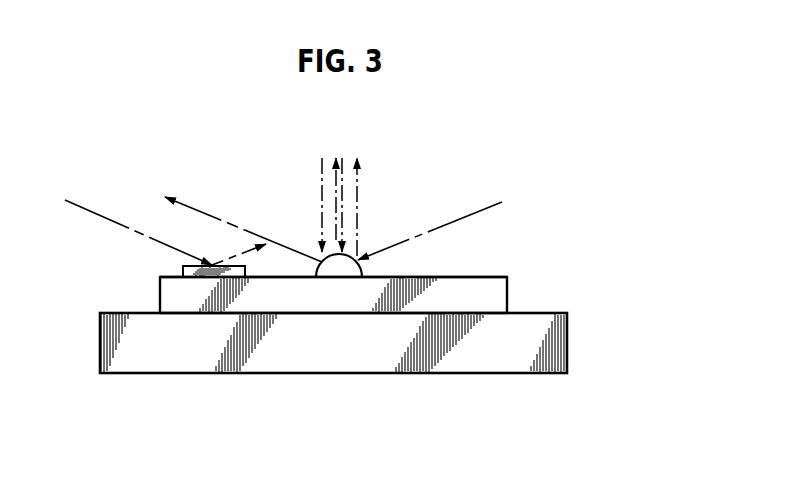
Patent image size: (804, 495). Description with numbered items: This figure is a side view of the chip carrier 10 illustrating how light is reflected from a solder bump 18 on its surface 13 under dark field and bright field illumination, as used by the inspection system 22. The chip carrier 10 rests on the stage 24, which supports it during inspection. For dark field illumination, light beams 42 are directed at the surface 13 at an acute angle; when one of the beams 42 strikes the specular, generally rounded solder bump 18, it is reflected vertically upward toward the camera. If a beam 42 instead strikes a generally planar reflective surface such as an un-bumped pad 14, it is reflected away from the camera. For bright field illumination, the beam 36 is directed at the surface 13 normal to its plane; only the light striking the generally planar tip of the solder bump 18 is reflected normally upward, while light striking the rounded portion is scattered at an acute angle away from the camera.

The chip carrier 10 is at (507, 302).
The surface 13 is at (481, 277).
The un-bumped pad 14 is at (183, 266).
The solder bump 18 is at (361, 268).
The system 22 is at (368, 128).
The stage 24 is at (567, 352).
The beam 36 is at (322, 190).
The light beams 42 is at (152, 238).